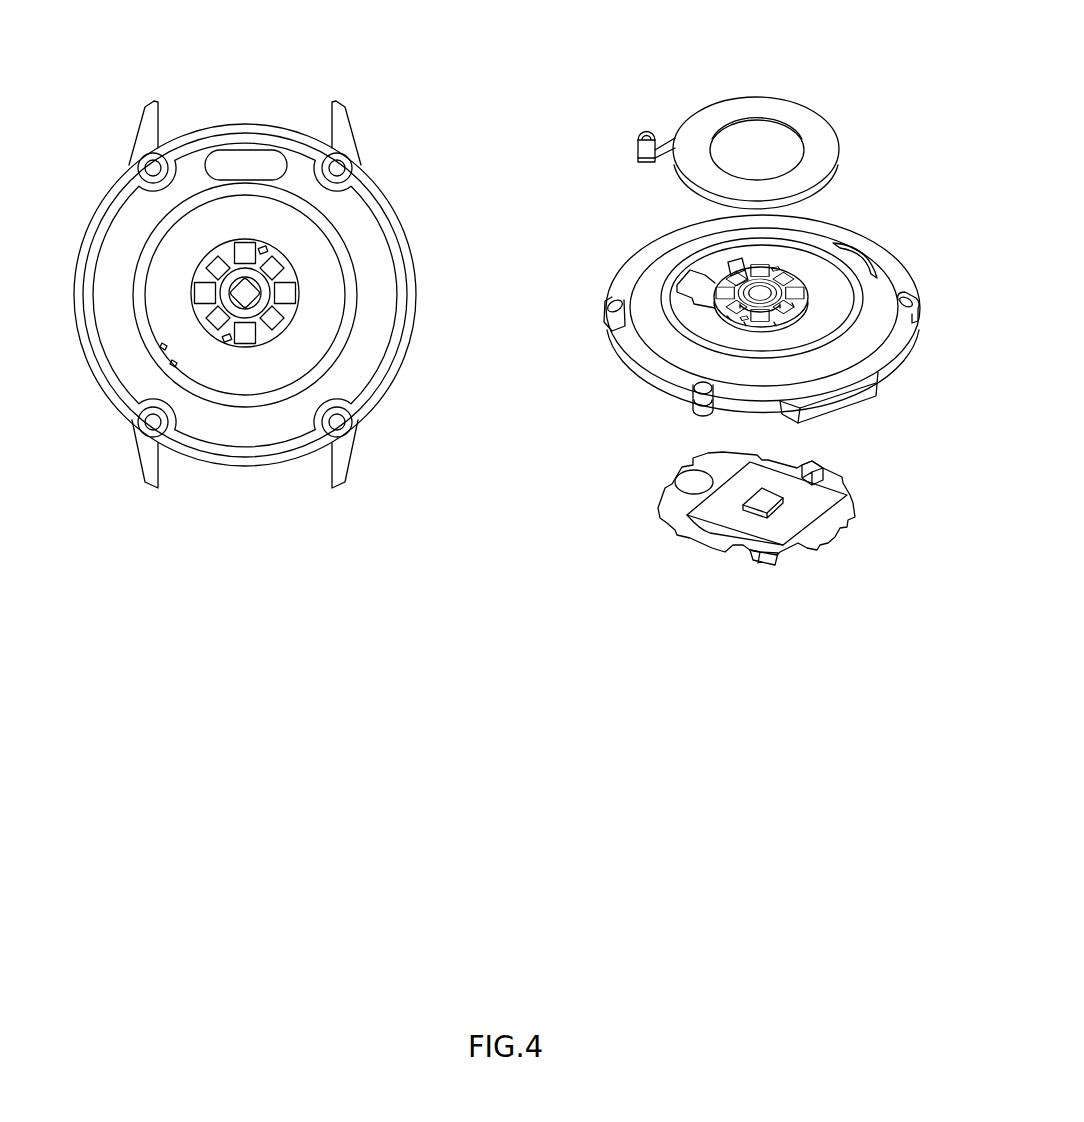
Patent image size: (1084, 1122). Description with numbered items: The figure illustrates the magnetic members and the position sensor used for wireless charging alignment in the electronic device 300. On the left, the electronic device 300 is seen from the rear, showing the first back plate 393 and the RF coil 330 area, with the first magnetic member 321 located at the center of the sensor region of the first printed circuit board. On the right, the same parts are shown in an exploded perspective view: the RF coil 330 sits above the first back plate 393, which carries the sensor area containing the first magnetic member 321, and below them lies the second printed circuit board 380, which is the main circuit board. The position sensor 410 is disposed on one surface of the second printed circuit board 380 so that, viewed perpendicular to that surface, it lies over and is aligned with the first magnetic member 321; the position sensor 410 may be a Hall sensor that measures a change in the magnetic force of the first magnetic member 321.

The electronic device 300 is at (286, 74).
The first back plate 393 is at (118, 238).
The RF coil 330 is at (315, 252).
The first magnetic member 321 is at (747, 288).
The second printed circuit board 380 is at (717, 517).
The position sensor 410 is at (747, 506).